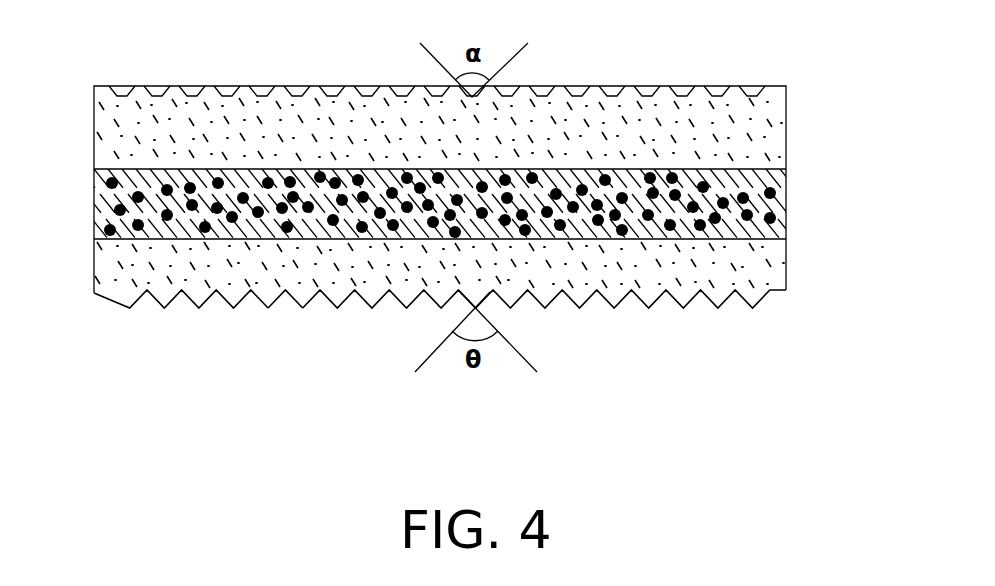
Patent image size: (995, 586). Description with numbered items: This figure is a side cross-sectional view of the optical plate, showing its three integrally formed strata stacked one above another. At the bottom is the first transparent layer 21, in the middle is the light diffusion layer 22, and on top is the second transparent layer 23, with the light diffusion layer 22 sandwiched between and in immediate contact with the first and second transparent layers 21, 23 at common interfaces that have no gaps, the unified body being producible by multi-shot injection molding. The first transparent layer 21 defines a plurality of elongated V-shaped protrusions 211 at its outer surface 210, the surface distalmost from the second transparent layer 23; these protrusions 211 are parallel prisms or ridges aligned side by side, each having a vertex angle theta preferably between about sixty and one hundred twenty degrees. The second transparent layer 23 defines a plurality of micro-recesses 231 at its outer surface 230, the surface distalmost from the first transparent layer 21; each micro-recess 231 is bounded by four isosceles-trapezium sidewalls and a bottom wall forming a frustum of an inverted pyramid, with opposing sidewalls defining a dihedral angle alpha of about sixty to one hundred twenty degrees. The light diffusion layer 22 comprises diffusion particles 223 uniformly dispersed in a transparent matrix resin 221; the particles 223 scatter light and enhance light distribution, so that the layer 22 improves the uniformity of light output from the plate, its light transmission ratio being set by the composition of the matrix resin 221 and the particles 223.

The first transparent layer 21 is at (487, 290).
The light diffusion layer 22 is at (446, 206).
The second transparent layer 23 is at (485, 93).
The outer surface 210 is at (487, 325).
The elongated V-shaped protrusion 211 is at (283, 296).
The transparent matrix resin 221 is at (104, 229).
The diffusion particles 223 is at (110, 186).
The outer surface 230 is at (437, 57).
The micro-recess 231 is at (270, 96).